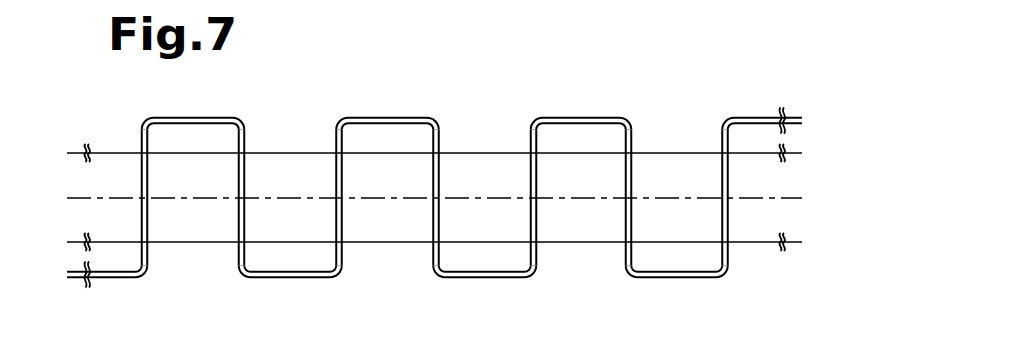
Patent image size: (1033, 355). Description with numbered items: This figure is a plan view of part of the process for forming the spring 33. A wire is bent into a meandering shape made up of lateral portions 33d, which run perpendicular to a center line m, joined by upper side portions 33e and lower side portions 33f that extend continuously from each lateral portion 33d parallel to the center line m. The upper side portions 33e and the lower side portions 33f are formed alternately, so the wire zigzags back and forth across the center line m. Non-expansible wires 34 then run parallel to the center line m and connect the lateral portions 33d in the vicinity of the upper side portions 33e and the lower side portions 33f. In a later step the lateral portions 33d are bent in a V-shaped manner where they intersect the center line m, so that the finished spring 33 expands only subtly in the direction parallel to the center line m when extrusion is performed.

The spring 33 is at (841, 121).
The lateral portion 33d is at (237, 180).
The upper side portion 33e is at (198, 118).
The lower side portion 33f is at (103, 278).
The non-expansible wire 34 is at (502, 152).
The center line m is at (449, 191).